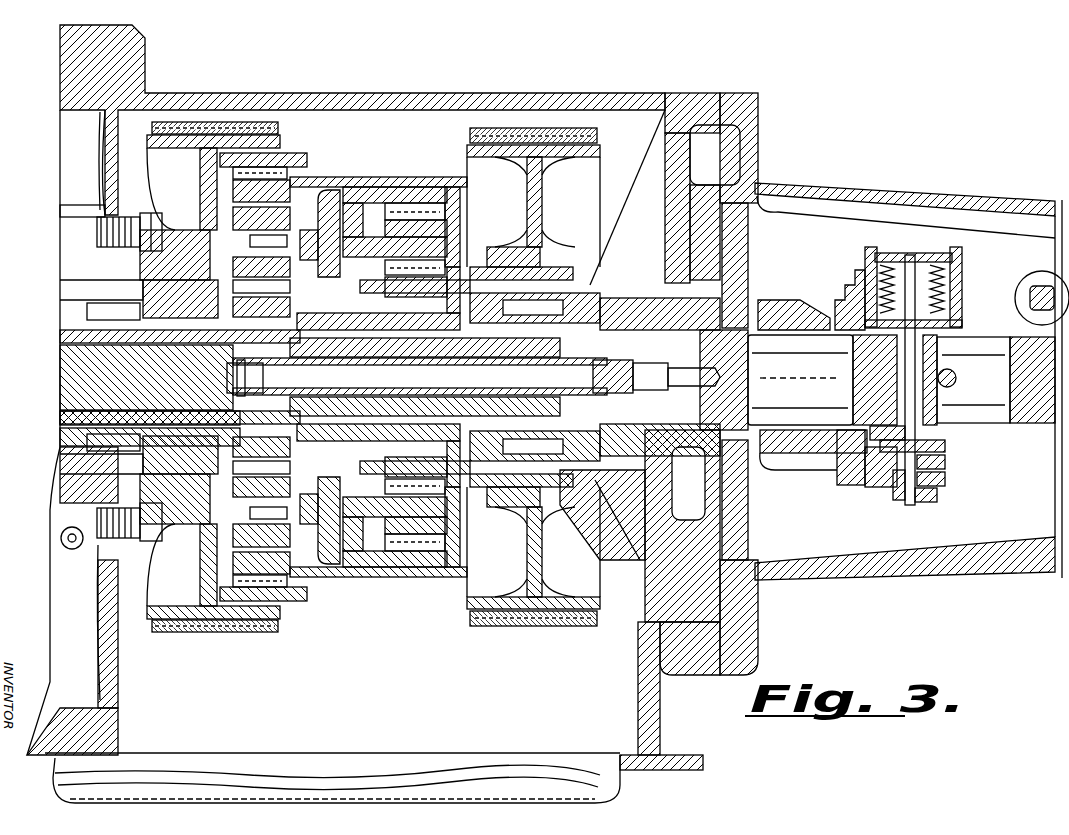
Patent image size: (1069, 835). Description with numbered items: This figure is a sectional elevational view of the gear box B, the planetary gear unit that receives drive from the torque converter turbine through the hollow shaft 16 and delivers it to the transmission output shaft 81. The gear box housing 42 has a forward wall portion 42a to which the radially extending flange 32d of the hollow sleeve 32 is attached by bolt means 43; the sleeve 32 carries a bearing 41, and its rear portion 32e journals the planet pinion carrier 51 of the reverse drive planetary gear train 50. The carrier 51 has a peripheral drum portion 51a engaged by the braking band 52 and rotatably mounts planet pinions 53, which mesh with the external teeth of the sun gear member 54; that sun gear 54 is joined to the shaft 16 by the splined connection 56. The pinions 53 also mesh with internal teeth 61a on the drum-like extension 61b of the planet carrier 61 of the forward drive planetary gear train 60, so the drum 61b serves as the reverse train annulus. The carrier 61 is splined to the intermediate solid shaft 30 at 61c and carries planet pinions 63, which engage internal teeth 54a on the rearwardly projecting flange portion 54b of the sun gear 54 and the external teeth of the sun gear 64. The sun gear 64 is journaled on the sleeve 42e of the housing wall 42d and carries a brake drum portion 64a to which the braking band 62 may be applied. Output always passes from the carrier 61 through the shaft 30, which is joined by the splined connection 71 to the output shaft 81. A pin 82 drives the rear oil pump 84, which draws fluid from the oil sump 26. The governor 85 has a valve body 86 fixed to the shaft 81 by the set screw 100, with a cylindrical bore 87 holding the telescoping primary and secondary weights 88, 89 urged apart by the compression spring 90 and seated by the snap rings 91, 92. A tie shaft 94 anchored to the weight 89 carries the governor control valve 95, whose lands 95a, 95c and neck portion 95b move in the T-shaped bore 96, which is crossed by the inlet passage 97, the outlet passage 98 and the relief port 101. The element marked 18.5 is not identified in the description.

The planetary gear unit B is at (548, 397).
The turbine driven hollow shaft 16 is at (62, 338).
The bolt hole 18.5 is at (72, 549).
The oil sump 26 is at (58, 790).
The intermediate solid shaft 30 is at (367, 370).
The fixed sleeve 32 is at (62, 441).
The radially extending flange 32d is at (97, 220).
The rear portion of sleeve 32e is at (146, 377).
The bearing 41 is at (180, 445).
The gear box housing 42 is at (383, 397).
The forward wall portion 42a is at (115, 192).
The gear box housing wall 42d is at (668, 498).
The axially extending sleeve 42e is at (568, 498).
The bolt means 43 is at (97, 238).
The reverse drive planetary gear train 50 is at (198, 372).
The planet pinion carrier 51 is at (170, 377).
The peripheral drum portion 51a is at (150, 146).
The braking band 52 is at (250, 128).
The planet pinions 53 is at (322, 208).
The sun gear member 54 is at (245, 460).
The internal teeth 54a is at (355, 512).
The drum-like flange portion 54b is at (380, 205).
The splined connection 56 is at (249, 402).
The forward drive planetary gear train 60 is at (373, 319).
The planet carrier 61 is at (310, 361).
The internal teeth 61a is at (290, 162).
The drum-like extension 61b is at (360, 176).
The spline 61c is at (400, 332).
The braking band 62 is at (598, 140).
The planet pinions 63 is at (425, 275).
The sun gear 64 is at (515, 377).
The brake drum portion 64a is at (543, 192).
The splined connection 71 is at (512, 333).
The transmission output shaft 81 is at (724, 380).
The pin 82 is at (760, 340).
The gear type oil pump 84 is at (750, 488).
The governor 85 is at (909, 360).
The valve body 86 is at (818, 262).
The cylindrical bore 87 is at (893, 253).
The primary weight 88 is at (962, 288).
The secondary weight 89 is at (962, 270).
The compression spring 90 is at (965, 305).
The snap ring 91 is at (865, 260).
The snap ring 92 is at (938, 270).
The tie shaft 94 is at (905, 355).
The governor control valve 95 is at (883, 467).
The land 95a is at (945, 447).
The neck portion 95b is at (945, 463).
The land 95c is at (945, 479).
The T-shaped bore 96 is at (930, 503).
The pressure fluid inlet passage 97 is at (882, 428).
The outlet passage 98 is at (866, 470).
The set screw 100 is at (947, 388).
The relief port 101 is at (893, 492).